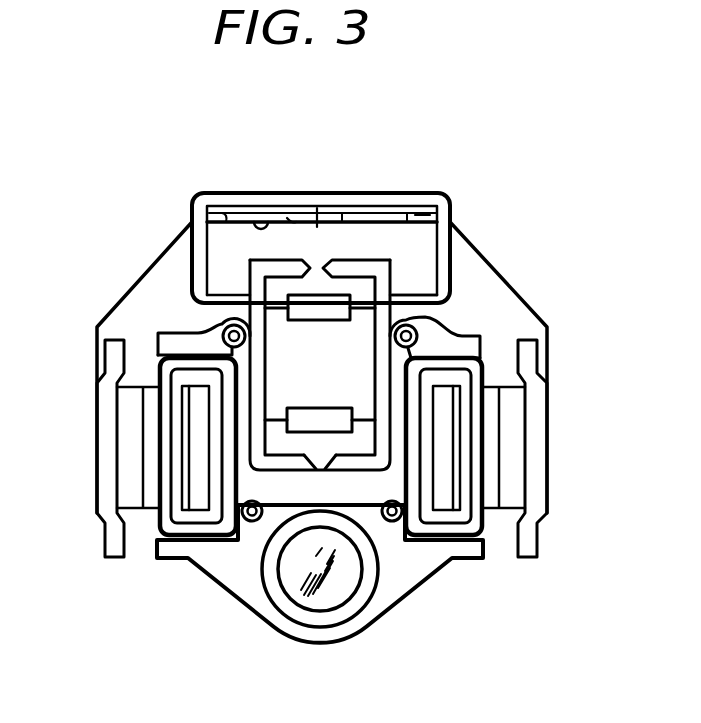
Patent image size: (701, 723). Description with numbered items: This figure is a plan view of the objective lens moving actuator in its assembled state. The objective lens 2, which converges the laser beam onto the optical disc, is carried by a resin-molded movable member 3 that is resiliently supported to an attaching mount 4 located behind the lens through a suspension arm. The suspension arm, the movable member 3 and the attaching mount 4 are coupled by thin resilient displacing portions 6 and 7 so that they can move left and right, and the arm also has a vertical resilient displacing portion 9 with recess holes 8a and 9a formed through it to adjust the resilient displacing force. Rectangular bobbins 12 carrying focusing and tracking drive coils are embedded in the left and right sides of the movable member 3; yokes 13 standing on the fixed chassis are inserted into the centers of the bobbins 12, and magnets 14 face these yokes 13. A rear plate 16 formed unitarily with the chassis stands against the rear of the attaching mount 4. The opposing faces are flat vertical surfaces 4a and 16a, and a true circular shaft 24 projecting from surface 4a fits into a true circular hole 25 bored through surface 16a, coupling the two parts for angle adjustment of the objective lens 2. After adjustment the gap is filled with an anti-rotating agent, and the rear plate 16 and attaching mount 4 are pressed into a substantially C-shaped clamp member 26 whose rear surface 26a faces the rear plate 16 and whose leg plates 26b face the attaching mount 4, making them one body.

The objective lens 2 is at (345, 583).
The movable member 3 is at (417, 557).
The attaching mount 4 is at (320, 263).
The flat vertical surface 4a is at (222, 213).
The resilient displacing portion 6 is at (318, 467).
The resilient displacing portion 7 is at (423, 273).
The recess hole 8a is at (313, 424).
The vertical resilient displacing portion 9 is at (480, 336).
The recess hole 9a is at (324, 320).
The bobbin 12 is at (157, 407).
The yoke 13 is at (197, 438).
The magnet 14 is at (133, 488).
The rear plate 16 is at (447, 193).
The flat vertical surface 16a is at (254, 222).
The shaft 24 is at (317, 210).
The hole 25 is at (287, 217).
The clamp member 26 is at (380, 194).
The rear surface 26a is at (422, 214).
The leg plate 26b is at (215, 306).